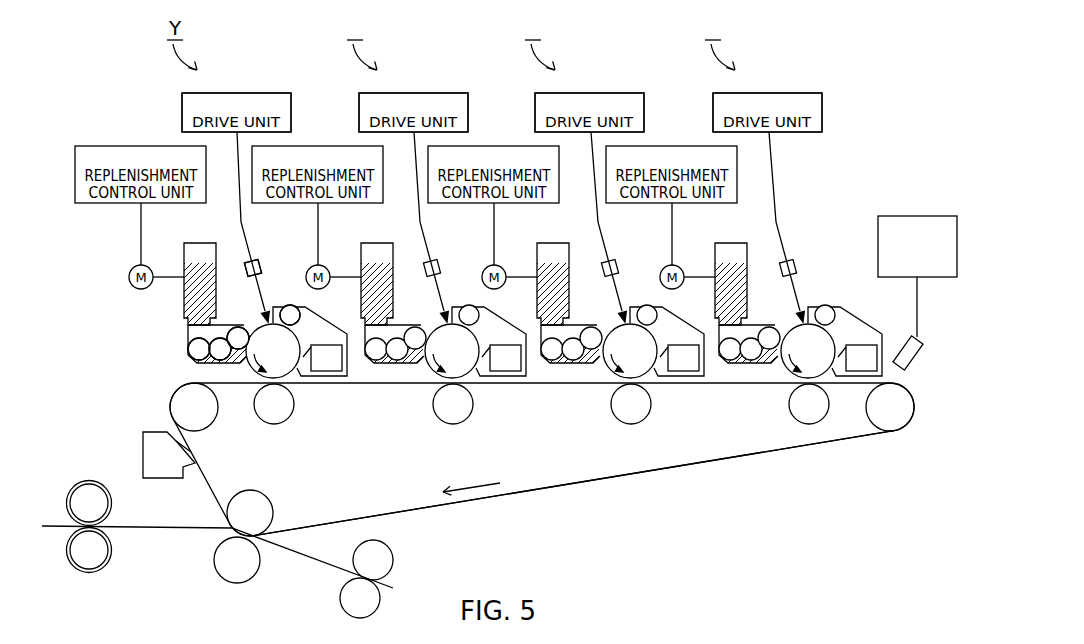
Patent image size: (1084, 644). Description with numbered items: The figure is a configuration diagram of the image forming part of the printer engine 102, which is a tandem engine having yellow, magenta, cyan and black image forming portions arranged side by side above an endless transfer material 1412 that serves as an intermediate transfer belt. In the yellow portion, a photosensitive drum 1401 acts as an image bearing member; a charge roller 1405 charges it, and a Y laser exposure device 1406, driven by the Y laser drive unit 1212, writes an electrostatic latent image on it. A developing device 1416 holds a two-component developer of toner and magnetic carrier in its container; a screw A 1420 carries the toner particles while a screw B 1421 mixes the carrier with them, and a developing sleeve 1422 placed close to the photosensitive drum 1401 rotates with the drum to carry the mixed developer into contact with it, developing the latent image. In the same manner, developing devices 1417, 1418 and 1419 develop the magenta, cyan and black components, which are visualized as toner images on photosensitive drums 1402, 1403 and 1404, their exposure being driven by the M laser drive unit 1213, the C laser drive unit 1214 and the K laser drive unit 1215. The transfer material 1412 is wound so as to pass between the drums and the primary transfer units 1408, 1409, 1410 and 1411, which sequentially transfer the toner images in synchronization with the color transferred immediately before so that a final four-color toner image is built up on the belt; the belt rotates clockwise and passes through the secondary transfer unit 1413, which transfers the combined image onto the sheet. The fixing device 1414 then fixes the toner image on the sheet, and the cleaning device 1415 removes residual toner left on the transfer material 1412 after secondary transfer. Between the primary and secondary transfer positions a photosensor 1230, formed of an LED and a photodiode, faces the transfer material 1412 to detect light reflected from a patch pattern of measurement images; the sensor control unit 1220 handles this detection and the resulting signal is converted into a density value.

The printer engine 102 is at (872, 66).
The Y laser drive unit 1212 is at (236, 93).
The M laser drive unit 1213 is at (417, 93).
The C laser drive unit 1214 is at (594, 93).
The K laser drive unit 1215 is at (775, 93).
The sensor control unit 1220 is at (925, 216).
The photosensor 1230 is at (914, 338).
The photosensitive drum 1401 is at (251, 378).
The photosensitive drum 1402 is at (431, 376).
The photosensitive drum 1403 is at (608, 376).
The photosensitive drum 1404 is at (832, 335).
The charge roller 1405 is at (287, 306).
The Y laser exposure device 1406 is at (257, 259).
The primary transfer unit 1408 is at (294, 409).
The primary transfer unit 1409 is at (475, 410).
The primary transfer unit 1410 is at (610, 407).
The primary transfer unit 1411 is at (789, 404).
The transfer material 1412 is at (578, 480).
The secondary transfer unit 1413 is at (275, 510).
The fixing device 1414 is at (112, 503).
The cleaning device 1415 is at (143, 447).
The developing device 1416 is at (187, 328).
The developing device 1417 is at (409, 322).
The developing device 1418 is at (587, 322).
The developing device 1419 is at (761, 322).
The screw A 1420 is at (221, 358).
The screw B 1421 is at (188, 348).
The developing sleeve 1422 is at (239, 328).